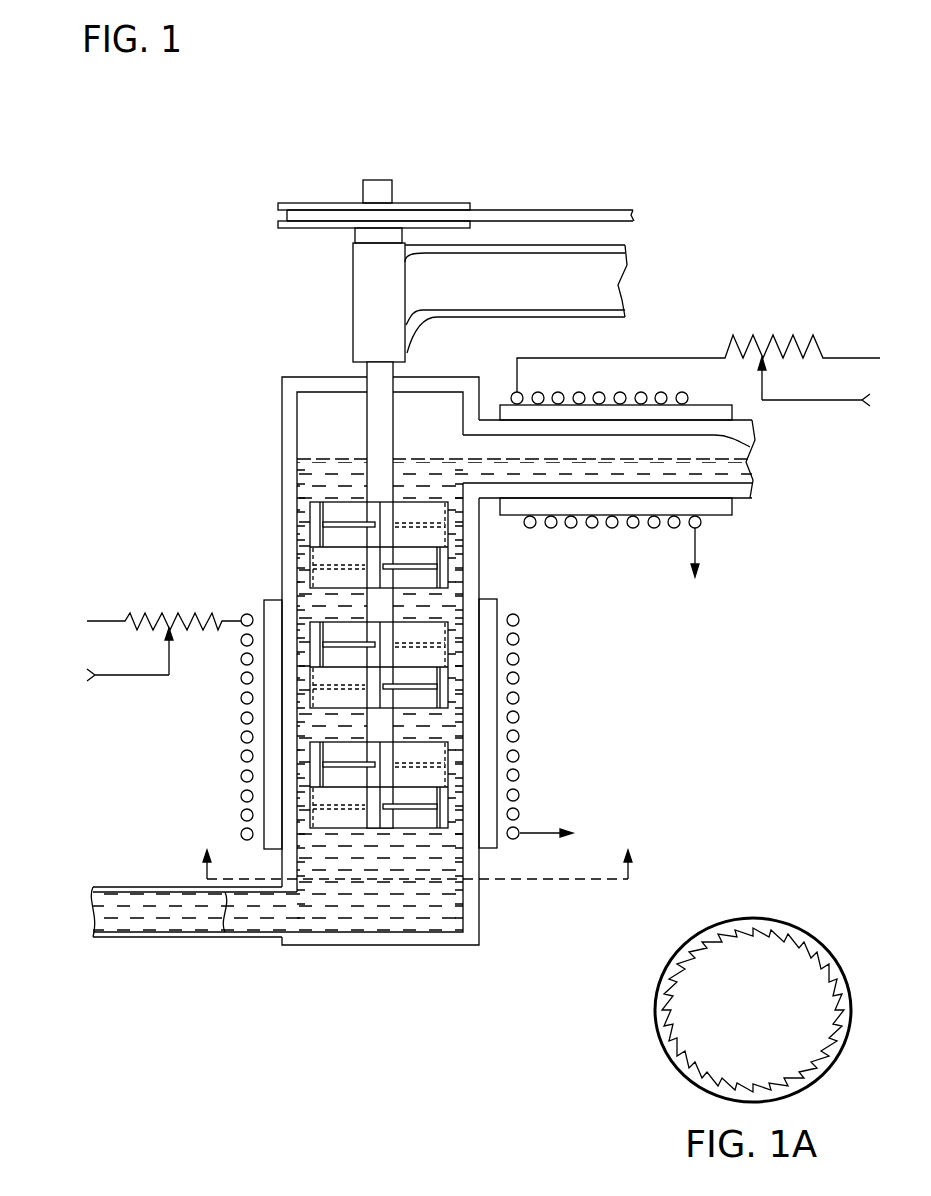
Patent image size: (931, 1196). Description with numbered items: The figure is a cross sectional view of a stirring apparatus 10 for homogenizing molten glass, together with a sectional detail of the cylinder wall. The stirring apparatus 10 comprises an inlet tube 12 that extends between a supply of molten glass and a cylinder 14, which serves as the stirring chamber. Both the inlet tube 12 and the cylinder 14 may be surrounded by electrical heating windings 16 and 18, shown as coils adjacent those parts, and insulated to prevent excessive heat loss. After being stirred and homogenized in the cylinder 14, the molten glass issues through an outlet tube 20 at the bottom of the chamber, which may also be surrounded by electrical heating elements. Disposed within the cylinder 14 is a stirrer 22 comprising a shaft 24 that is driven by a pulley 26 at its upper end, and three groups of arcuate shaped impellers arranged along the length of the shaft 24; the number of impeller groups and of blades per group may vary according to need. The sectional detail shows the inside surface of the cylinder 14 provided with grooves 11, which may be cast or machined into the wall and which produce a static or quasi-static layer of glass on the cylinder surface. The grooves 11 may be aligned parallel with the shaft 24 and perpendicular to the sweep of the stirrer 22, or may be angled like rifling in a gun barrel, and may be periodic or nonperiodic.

In FIG. 1, the stirring apparatus 10 is at (574, 168).
In FIG. 1A, the grooves 11 is at (787, 937).
In FIG. 1, the inlet tube 12 is at (738, 438).
In FIG. 1, the cylinder 14 is at (479, 555).
In FIG. 1A, the cylinder 14 is at (657, 1010).
In FIG. 1, the electrical heating windings 16 is at (848, 356).
In FIG. 1, the electrical heating windings 18 is at (97, 620).
In FIG. 1, the outlet tube 20 is at (225, 930).
In FIG. 1, the stirrer 22 is at (355, 412).
In FIG. 1, the shaft 24 is at (394, 189).
In FIG. 1, the pulley 26 is at (308, 204).